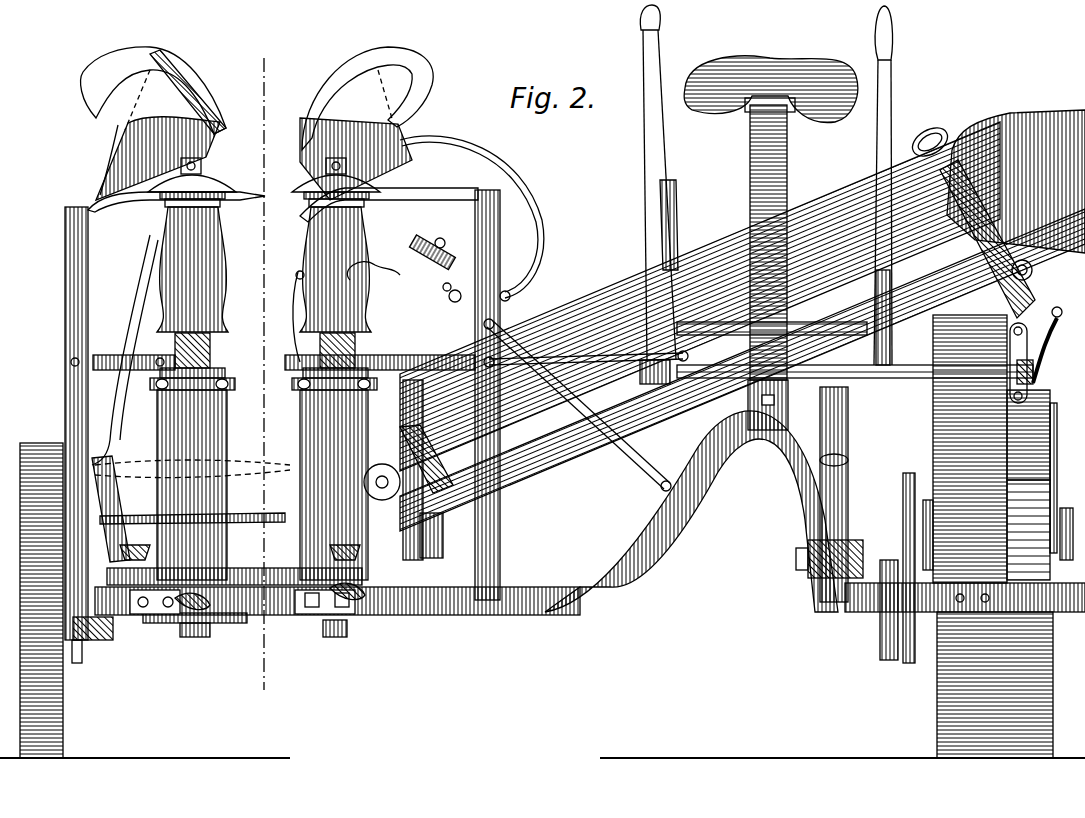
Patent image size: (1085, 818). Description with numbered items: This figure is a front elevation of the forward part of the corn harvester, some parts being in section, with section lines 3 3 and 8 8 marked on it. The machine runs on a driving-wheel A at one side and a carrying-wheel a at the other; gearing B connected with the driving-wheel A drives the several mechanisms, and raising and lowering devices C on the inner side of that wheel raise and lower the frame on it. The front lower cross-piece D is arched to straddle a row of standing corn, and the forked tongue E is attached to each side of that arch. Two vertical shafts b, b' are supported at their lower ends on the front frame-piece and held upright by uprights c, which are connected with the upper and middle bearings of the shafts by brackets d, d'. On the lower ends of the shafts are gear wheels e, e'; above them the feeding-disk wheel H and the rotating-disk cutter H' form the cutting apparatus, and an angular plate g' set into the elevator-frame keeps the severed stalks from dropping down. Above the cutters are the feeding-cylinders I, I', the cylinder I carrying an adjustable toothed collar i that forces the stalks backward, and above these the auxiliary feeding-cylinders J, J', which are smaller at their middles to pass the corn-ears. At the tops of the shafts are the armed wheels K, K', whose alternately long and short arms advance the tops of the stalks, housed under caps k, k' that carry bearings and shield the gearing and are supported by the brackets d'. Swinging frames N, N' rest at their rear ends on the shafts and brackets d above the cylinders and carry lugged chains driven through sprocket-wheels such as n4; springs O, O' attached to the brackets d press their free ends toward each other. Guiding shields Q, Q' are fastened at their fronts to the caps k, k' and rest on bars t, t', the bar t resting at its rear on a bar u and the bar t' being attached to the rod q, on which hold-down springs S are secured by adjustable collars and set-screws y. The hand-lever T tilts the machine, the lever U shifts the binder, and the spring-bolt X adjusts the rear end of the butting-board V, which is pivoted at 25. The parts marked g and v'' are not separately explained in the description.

The driving-wheel A is at (1053, 690).
The gearing B is at (1050, 490).
The raising and lowering devices C is at (876, 525).
The front lower cross-piece D is at (758, 465).
The tongue E is at (840, 578).
The feeding-disk wheel H is at (326, 615).
The rotating-disk cutter H' is at (351, 583).
The feeding-cylinder I is at (192, 485).
The feeding-cylinder I' is at (324, 485).
The auxiliary feeding-cylinder J is at (183, 269).
The auxiliary feeding-cylinder J' is at (341, 269).
The armed wheel K is at (199, 212).
The armed wheel K' is at (347, 203).
The swinging frame N is at (201, 355).
The swinging frame N' is at (323, 355).
The spring O is at (128, 350).
The spring O' is at (344, 316).
The guide or shield Q is at (153, 123).
The guide or shield Q' is at (366, 123).
The hold-down spring S is at (528, 208).
The hand-lever T is at (660, 194).
The lever U is at (892, 185).
The butting-board V is at (742, 308).
The spring-bolt X is at (940, 125).
The carrying-wheel a is at (41, 600).
The vertical shaft b is at (195, 646).
The vertical shaft b' is at (346, 642).
The upright c is at (65, 303).
The bracket d is at (269, 272).
The bracket d' is at (381, 267).
The gear wheel e is at (181, 621).
The gear wheel e' is at (372, 614).
The bearing g is at (131, 548).
The angular plate g' is at (339, 548).
The collar i is at (255, 500).
The cap k is at (208, 161).
The cap k' is at (313, 161).
The sprocket-wheel n4 is at (276, 386).
The rod or arm q is at (420, 258).
The supporting-bar t is at (169, 267).
The supporting-bar t' is at (365, 202).
The bar u is at (111, 509).
The pivot v'' is at (108, 377).
The collar and set-screw y is at (450, 296).
The section line 3 3 is at (264, 370).
The section line 8 8 is at (370, 548).
The pivot of butting-board 25 is at (420, 470).